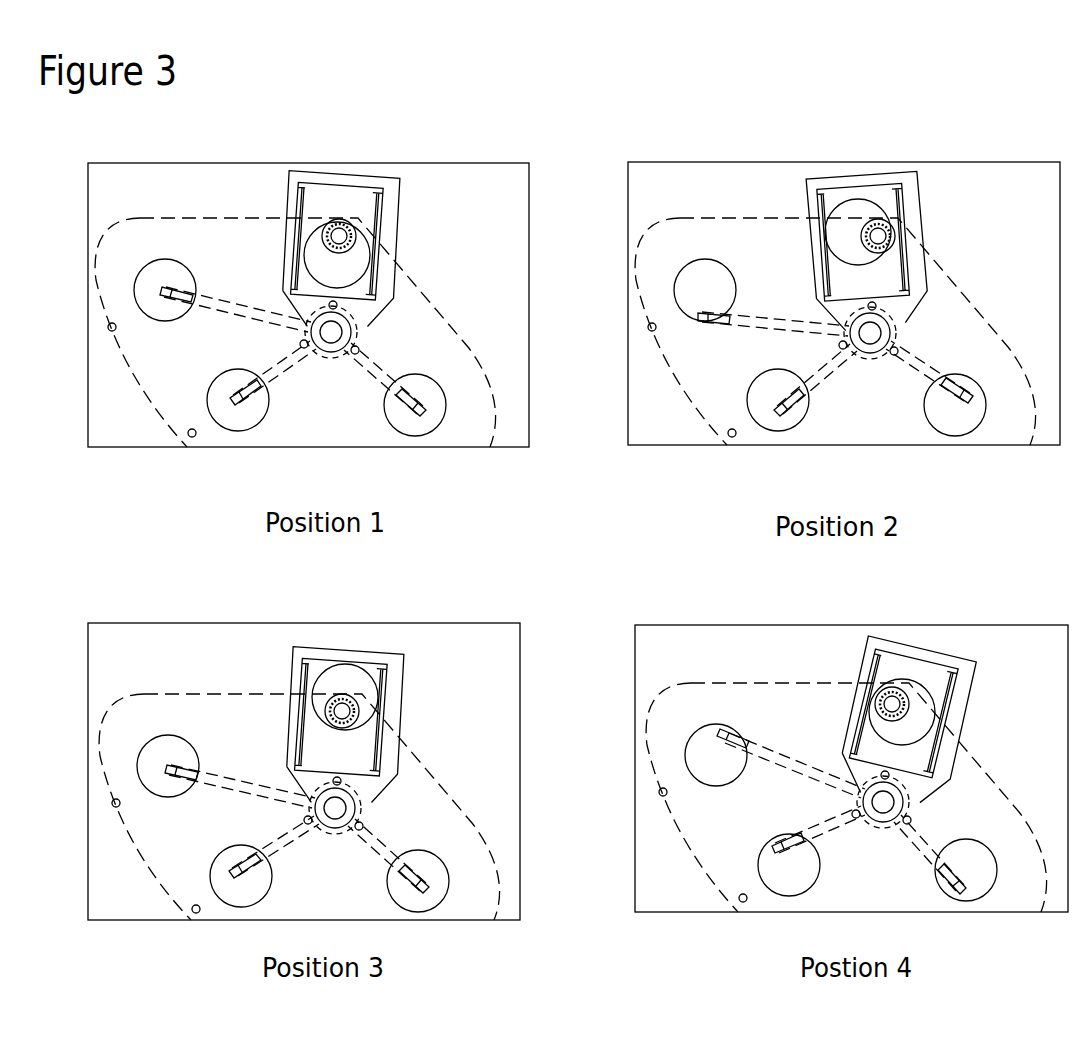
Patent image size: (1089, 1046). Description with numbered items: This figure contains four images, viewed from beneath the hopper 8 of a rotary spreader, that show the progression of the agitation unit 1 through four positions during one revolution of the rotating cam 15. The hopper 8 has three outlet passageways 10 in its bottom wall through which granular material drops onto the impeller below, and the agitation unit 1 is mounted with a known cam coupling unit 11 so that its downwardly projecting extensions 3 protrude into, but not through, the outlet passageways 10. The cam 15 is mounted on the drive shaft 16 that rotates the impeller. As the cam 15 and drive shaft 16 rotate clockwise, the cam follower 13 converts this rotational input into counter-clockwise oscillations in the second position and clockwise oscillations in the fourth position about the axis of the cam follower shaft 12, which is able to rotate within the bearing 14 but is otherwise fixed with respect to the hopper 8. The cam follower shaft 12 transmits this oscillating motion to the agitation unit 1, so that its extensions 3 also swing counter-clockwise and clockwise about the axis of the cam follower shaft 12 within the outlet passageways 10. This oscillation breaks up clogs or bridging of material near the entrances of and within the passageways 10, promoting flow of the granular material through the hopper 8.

The agitation unit 1 is at (328, 368).
The extensions 3 is at (172, 288).
The hopper 8 is at (148, 218).
The outlet passageways 10 is at (212, 382).
The cam coupling unit 11 is at (431, 266).
The cam follower shaft 12 is at (328, 332).
The cam follower 13 is at (400, 226).
The bearing 14 is at (354, 330).
The cam 15 is at (362, 286).
The drive shaft 16 is at (341, 236).